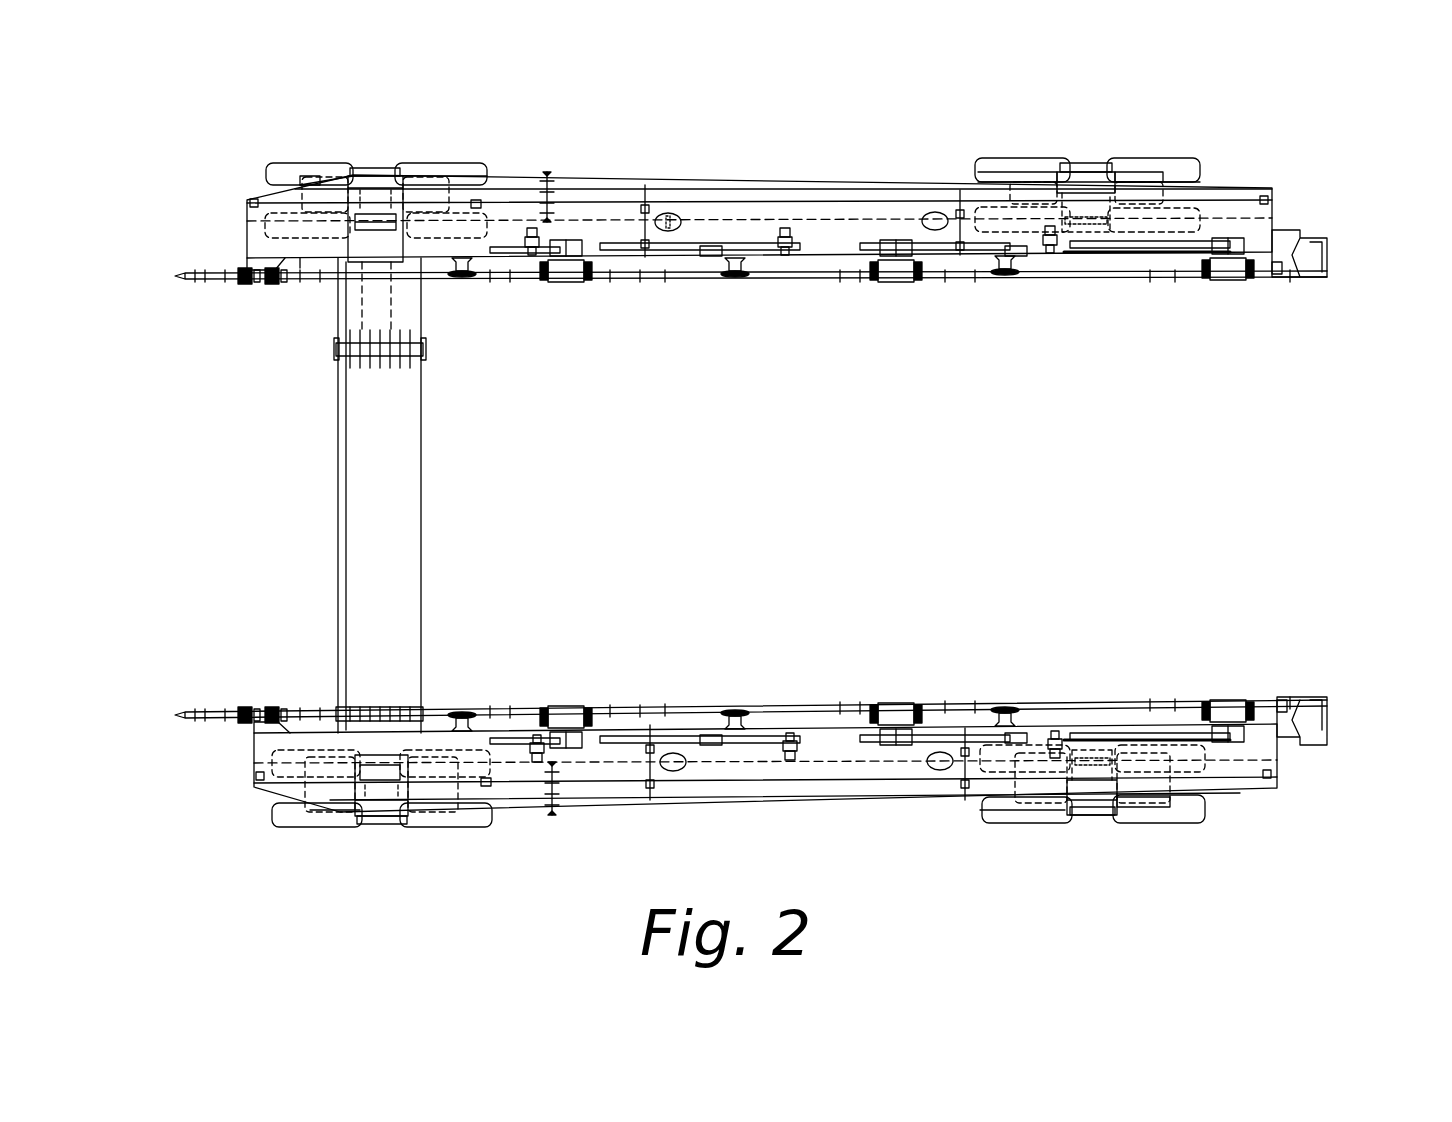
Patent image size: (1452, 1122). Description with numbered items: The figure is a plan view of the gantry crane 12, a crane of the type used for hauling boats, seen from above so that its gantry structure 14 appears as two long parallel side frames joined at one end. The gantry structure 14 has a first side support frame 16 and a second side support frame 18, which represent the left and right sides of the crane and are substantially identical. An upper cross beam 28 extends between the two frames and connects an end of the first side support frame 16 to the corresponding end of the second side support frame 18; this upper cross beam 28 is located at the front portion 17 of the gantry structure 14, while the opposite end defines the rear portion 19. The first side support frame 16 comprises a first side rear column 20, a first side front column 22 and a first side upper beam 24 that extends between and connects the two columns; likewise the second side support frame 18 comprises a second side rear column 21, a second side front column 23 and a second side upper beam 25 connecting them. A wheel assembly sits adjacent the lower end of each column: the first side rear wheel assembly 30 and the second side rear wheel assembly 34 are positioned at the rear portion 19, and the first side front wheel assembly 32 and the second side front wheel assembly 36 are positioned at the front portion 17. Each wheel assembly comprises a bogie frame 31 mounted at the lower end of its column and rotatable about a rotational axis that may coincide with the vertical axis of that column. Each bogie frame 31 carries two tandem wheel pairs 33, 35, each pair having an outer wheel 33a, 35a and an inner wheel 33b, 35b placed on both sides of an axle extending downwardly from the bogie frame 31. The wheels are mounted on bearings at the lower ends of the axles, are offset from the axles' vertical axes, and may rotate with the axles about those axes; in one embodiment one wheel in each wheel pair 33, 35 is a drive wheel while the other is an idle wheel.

The gantry crane 12 is at (1320, 152).
The gantry structure 14 is at (322, 325).
The first side support frame 16 is at (548, 815).
The front portion 17 is at (236, 178).
The second side support frame 18 is at (539, 168).
The rear portion 19 is at (1312, 790).
The first side rear column 20 is at (1087, 823).
The second side rear column 21 is at (1087, 165).
The first side front column 22 is at (385, 822).
The second side front column 23 is at (372, 168).
The first side upper beam 24 is at (815, 790).
The second side upper beam 25 is at (625, 195).
The upper cross beam 28 is at (362, 578).
The first side rear wheel assembly 30 is at (1056, 862).
The bogie frame 31 is at (312, 178).
The first side front wheel assembly 32 is at (312, 833).
The tandem wheel pair 33 is at (290, 161).
The outer wheel 33a is at (292, 170).
The inner wheel 33b is at (292, 226).
The second side rear wheel assembly 34 is at (966, 140).
The tandem wheel pair 35 is at (448, 152).
The outer wheel 35a is at (470, 168).
The inner wheel 35b is at (480, 237).
The second side front wheel assembly 36 is at (348, 148).